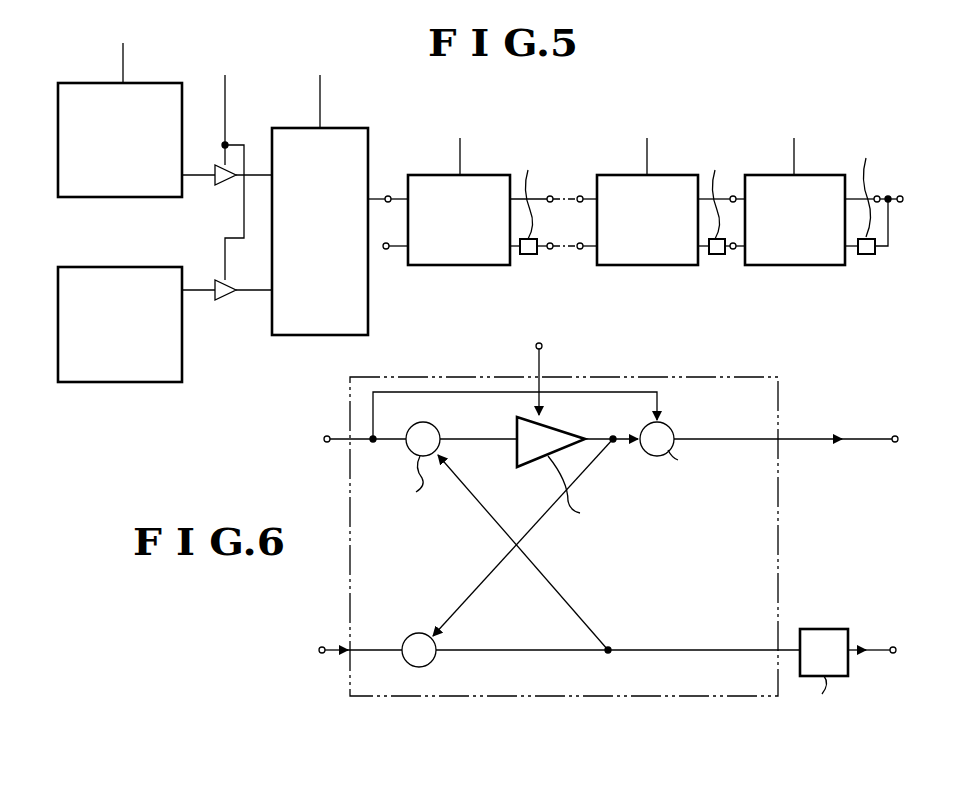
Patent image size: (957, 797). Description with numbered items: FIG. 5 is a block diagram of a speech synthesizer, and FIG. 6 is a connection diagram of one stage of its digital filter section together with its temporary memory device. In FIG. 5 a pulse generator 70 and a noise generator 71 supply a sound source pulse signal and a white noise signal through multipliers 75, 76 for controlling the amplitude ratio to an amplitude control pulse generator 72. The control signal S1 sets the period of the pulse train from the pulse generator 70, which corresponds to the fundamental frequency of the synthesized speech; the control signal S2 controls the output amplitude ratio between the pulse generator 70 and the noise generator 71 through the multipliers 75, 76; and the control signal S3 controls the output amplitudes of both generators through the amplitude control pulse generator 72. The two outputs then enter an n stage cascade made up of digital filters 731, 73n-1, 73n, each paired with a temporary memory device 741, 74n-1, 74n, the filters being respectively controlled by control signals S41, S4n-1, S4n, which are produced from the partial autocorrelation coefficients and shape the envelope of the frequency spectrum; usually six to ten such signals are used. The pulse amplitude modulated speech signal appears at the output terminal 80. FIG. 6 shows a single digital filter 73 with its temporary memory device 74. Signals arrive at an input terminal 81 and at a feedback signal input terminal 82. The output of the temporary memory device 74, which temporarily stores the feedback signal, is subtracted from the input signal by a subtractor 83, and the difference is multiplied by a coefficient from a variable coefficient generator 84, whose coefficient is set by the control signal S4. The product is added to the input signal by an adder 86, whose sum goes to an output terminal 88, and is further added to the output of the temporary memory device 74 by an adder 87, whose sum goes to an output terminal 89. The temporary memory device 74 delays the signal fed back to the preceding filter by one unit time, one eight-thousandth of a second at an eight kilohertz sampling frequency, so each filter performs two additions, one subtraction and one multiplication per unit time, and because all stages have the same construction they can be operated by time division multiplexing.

In FIG. 5, the pulse generator 70 is at (115, 197).
In FIG. 5, the noise generator 71 is at (115, 382).
In FIG. 5, the amplitude control pulse generator 72 is at (320, 335).
In FIG. 6, the digital filter 73 is at (648, 377).
In FIG. 5, the first digital filter 731 is at (458, 265).
In FIG. 5, the (n-1)th digital filter 73n-1 is at (640, 265).
In FIG. 5, the nth digital filter 73n is at (797, 265).
In FIG. 5, the first temporary memory device 741 is at (530, 254).
In FIG. 5, the (n-1)th temporary memory device 74n-1 is at (717, 254).
In FIG. 5, the nth temporary memory device 74n is at (866, 254).
In FIG. 6, the temporary memory device 74 is at (840, 688).
In FIG. 5, the multiplier for controlling the amplitude ratio 75 is at (226, 183).
In FIG. 5, the multiplier for controlling the amplitude ratio 76 is at (226, 298).
In FIG. 5, the output terminal 80 is at (880, 180).
In FIG. 6, the input terminal 81 is at (351, 440).
In FIG. 6, the feedback signal input terminal 82 is at (888, 651).
In FIG. 6, the subtractor 83 is at (435, 428).
In FIG. 6, the variable coefficient generator 84 is at (560, 428).
In FIG. 6, the adder 86 is at (670, 428).
In FIG. 6, the adder 87 is at (417, 633).
In FIG. 6, the output terminal 88 is at (802, 441).
In FIG. 6, the output terminal 89 is at (348, 651).
In FIG. 5, the control signal S1 is at (124, 48).
In FIG. 5, the control signal S2 is at (230, 164).
In FIG. 5, the control signal S3 is at (322, 88).
In FIG. 6, the control signal S4 is at (541, 364).
In FIG. 5, the control signal S41 is at (460, 143).
In FIG. 5, the control signal S4n-1 is at (648, 142).
In FIG. 5, the control signal S4n is at (795, 142).